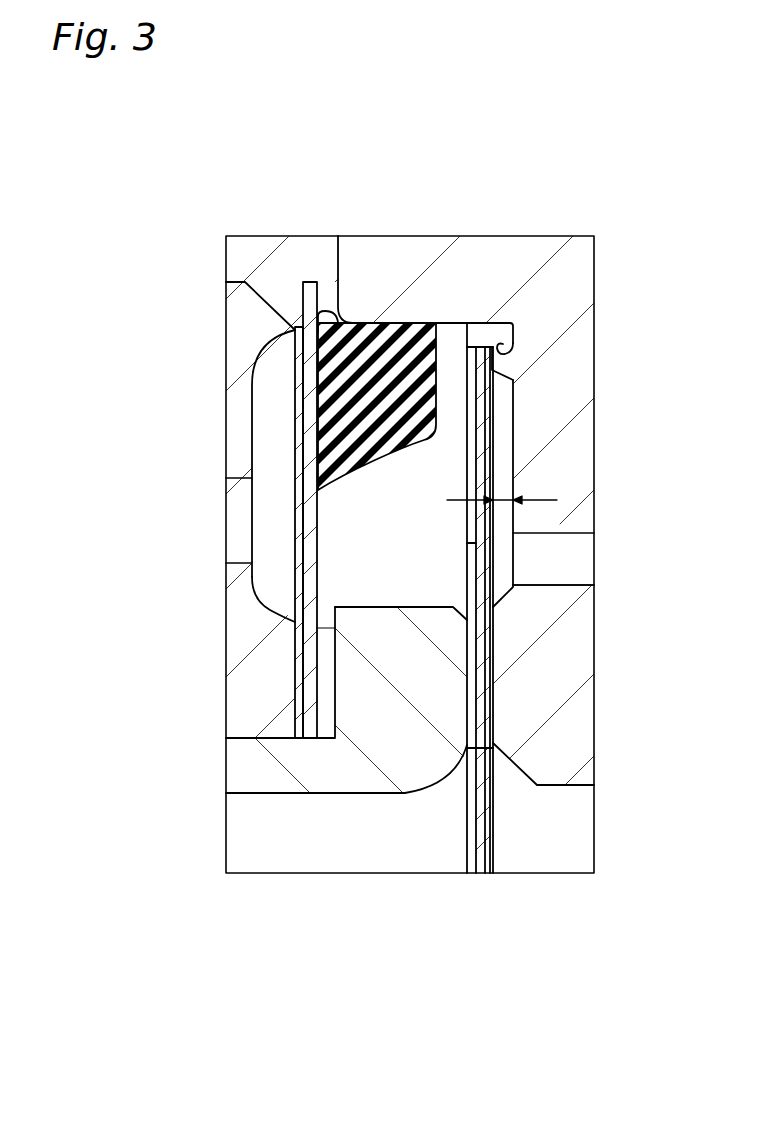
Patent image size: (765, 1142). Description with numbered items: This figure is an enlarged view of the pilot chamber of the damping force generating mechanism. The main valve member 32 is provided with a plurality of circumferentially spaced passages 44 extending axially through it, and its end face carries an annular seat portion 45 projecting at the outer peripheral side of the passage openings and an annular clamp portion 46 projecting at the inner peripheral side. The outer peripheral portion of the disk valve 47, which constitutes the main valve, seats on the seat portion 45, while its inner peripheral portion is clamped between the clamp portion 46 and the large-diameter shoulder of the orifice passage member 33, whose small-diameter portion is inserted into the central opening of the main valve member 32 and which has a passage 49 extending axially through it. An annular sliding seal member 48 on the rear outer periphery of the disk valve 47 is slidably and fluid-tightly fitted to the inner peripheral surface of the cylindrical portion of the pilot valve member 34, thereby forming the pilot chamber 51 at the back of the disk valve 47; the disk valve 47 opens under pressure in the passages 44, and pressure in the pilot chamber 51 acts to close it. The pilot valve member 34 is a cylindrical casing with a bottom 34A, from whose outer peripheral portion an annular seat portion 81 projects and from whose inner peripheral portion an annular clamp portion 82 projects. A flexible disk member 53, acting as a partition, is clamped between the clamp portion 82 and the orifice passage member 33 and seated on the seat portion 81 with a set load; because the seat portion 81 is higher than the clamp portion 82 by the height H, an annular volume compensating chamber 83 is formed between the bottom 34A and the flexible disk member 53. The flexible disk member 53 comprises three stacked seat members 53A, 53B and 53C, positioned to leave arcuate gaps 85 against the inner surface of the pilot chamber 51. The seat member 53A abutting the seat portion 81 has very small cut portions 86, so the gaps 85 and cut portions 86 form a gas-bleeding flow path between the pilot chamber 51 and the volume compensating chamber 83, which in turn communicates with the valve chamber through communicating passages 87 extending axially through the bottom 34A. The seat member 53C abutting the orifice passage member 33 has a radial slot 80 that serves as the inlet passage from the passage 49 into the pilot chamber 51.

The main valve member 32 is at (240, 336).
The orifice passage member 33 is at (318, 762).
The pilot valve member 34 is at (380, 262).
The bottom 34A is at (580, 452).
The passages 44 is at (253, 562).
The seat portion 45 is at (300, 358).
The clamp portion 46 is at (292, 622).
The disk valve 47 is at (305, 281).
The sliding seal member 48 is at (321, 310).
The passage 49 is at (240, 841).
The pilot chamber 51 is at (385, 570).
The flexible disk member 53 is at (497, 488).
The seat member 53A is at (490, 322).
The seat member 53B is at (480, 322).
The seat member 53C is at (470, 322).
The slot 80 is at (468, 700).
The seat portion 81 is at (517, 330).
The clamp portion 82 is at (508, 728).
The volume compensating chamber 83 is at (505, 443).
The arcuate gaps 85 is at (460, 330).
The cut portions 86 is at (517, 378).
The communicating passages 87 is at (575, 563).
The gap height H is at (502, 486).